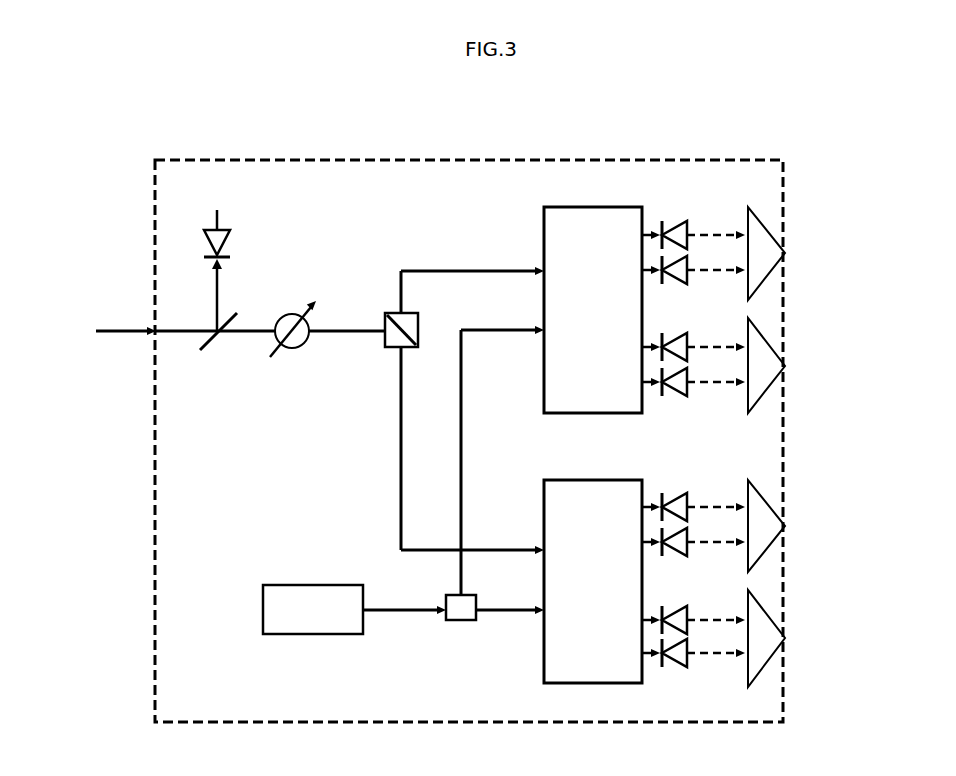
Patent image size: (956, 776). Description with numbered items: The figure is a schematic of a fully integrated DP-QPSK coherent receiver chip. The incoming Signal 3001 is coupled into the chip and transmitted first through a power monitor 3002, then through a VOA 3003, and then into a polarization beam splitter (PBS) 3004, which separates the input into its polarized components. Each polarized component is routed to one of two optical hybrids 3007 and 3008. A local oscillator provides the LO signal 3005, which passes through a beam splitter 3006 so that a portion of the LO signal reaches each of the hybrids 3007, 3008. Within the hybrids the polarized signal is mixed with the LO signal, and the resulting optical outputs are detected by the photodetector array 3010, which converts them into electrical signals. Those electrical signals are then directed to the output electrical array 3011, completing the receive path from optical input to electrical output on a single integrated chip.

The Signal 3001 is at (122, 327).
The power monitor 3002 is at (210, 207).
The VOA 3003 is at (302, 292).
The polarization beam splitter (PBS) 3004 is at (392, 300).
The LO signal 3005 is at (285, 640).
The beam splitter 3006 is at (440, 628).
The hybrid 3007 is at (580, 207).
The hybrid 3008 is at (560, 687).
The photodetector array 3010 is at (676, 226).
The output electrical array 3011 is at (789, 250).